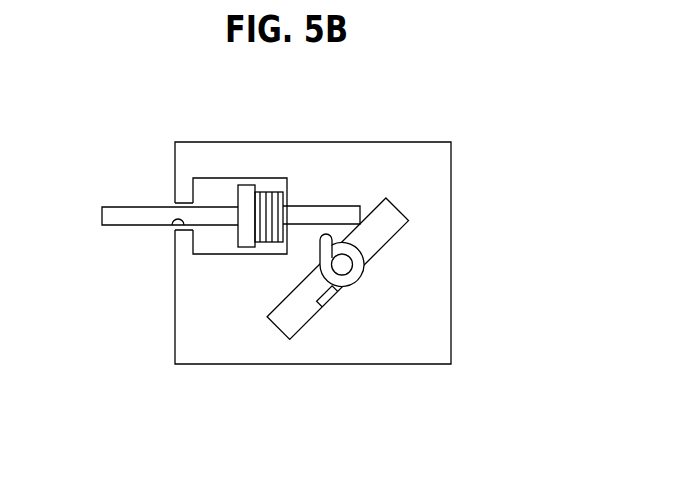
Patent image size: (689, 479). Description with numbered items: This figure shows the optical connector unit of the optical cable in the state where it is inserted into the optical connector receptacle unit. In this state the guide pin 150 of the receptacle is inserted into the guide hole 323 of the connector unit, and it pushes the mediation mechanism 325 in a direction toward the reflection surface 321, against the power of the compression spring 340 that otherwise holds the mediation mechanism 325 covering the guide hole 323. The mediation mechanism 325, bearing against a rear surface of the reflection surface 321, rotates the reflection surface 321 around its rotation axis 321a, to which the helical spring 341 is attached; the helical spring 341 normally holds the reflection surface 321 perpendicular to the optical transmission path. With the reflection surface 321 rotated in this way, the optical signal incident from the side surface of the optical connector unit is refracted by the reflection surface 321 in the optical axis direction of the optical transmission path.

The guide pin 150 is at (128, 207).
The guide hole 323 is at (176, 225).
The mediation mechanism 325 is at (250, 185).
The compression spring 340 is at (270, 242).
The reflection surface 321 is at (388, 228).
The rotation axis 321a is at (342, 264).
The helical spring 341 is at (364, 270).